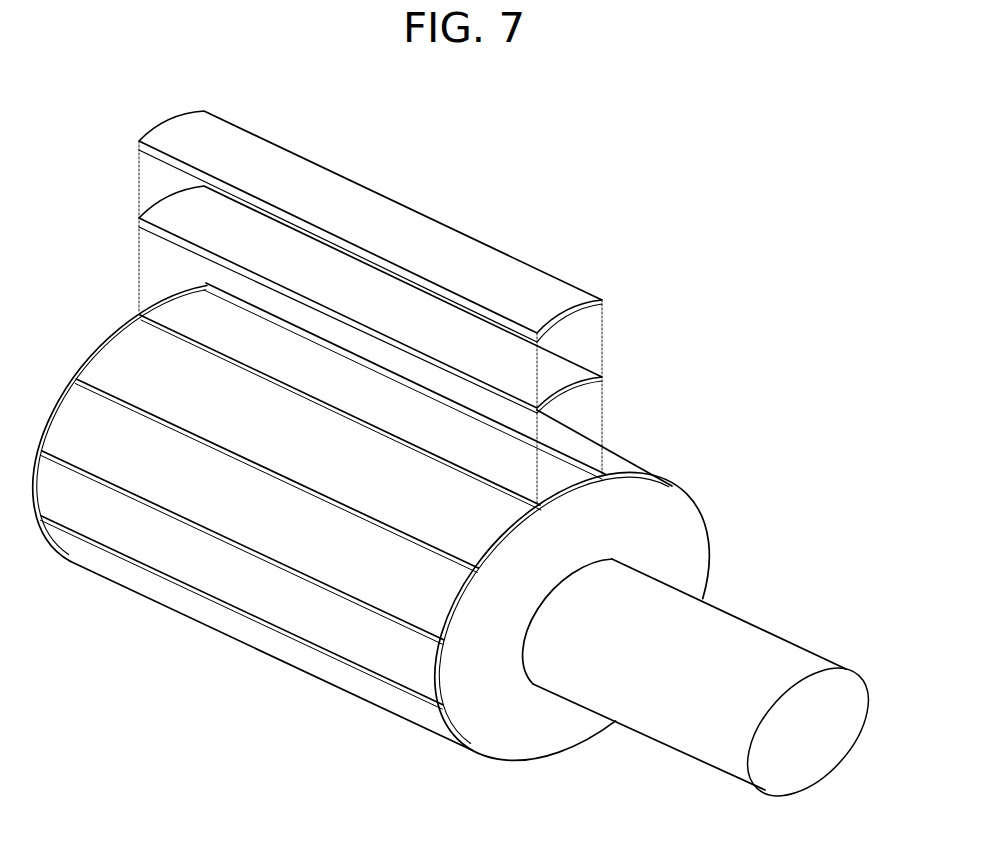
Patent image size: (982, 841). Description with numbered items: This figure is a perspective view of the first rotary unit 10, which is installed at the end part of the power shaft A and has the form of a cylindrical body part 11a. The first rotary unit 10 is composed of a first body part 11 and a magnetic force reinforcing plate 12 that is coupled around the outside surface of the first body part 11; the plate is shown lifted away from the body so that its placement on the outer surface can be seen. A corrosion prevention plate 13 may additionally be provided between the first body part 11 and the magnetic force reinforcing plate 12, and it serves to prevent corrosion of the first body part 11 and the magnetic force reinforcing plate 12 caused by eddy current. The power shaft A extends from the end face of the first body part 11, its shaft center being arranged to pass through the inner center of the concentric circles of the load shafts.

The first rotary unit 10 is at (700, 388).
The first body part 11 is at (678, 543).
The cylindrical body part 11a is at (678, 543).
The magnetic force reinforcing plate 12 is at (557, 297).
The corrosion prevention plate 13 is at (563, 372).
The power shaft A is at (752, 645).